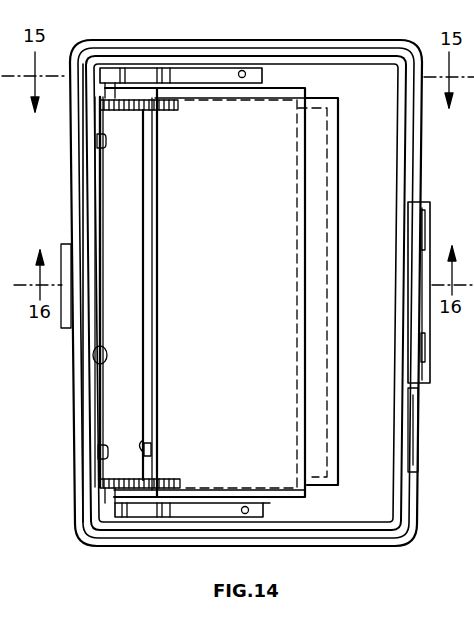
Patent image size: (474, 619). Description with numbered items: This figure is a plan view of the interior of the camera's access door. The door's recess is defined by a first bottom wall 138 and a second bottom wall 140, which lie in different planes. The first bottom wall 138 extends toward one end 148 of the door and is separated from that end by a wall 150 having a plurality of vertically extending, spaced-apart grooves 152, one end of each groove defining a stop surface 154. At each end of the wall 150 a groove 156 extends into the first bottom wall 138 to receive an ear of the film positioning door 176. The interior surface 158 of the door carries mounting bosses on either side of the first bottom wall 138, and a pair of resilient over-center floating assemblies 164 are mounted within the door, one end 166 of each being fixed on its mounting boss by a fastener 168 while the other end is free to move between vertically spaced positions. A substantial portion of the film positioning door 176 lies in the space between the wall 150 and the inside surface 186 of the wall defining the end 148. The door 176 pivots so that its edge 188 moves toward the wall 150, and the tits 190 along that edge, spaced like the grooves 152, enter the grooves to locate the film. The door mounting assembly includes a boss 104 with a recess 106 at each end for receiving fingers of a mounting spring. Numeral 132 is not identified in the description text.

The boss 104 is at (428, 364).
The recess 106 is at (427, 236).
The hinge pin tab 132 is at (60, 322).
The first bottom wall 138 is at (256, 283).
The second bottom wall 140 is at (317, 265).
The end of the access door 148 is at (72, 432).
The wall 150 is at (147, 235).
The grooves 152 is at (152, 450).
The stop surface 154 is at (143, 443).
The groove 156 is at (181, 105).
The interior surface 158 is at (380, 92).
The resilient over-center floating assembly 164 is at (131, 81).
The end of the floating assembly 166 is at (268, 509).
The fastener 168 is at (241, 70).
The film positioning door 176 is at (138, 288).
The inside surface 186 is at (95, 353).
The edge of the film positioning door 188 is at (105, 229).
The tits 190 is at (98, 146).